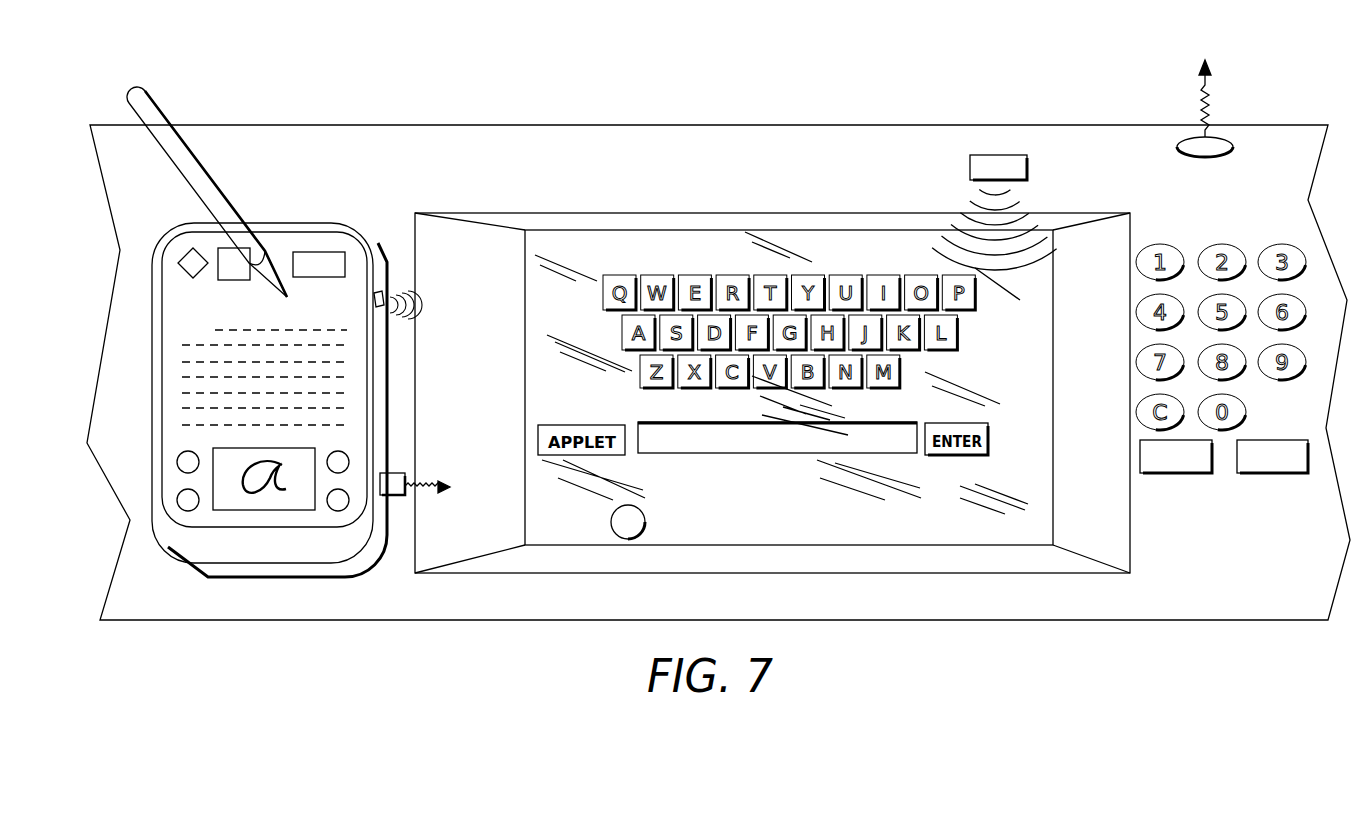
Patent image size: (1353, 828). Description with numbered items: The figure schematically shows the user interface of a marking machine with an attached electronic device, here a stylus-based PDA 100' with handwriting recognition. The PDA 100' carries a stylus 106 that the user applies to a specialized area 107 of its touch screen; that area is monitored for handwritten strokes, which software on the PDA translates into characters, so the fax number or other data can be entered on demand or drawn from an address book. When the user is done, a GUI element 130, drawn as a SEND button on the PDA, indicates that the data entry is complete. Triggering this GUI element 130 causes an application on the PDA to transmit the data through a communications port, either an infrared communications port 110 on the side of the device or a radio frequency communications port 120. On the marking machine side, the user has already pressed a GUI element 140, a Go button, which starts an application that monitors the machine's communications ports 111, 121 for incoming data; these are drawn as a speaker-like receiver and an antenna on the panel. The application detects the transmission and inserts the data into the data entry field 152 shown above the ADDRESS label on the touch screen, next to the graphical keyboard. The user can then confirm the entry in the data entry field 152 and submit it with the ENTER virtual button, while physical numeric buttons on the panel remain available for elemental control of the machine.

The PDA 100' is at (269, 360).
The stylus 106 is at (188, 140).
The specialized area 107 is at (213, 476).
The infrared communications port 110 is at (383, 258).
The communications port 111 is at (995, 155).
The radio frequency communications port 120 is at (400, 497).
The communications port 121 is at (1228, 140).
The GUI element 130 is at (313, 252).
The GUI element 140 is at (638, 538).
The data entry field 152 is at (765, 450).